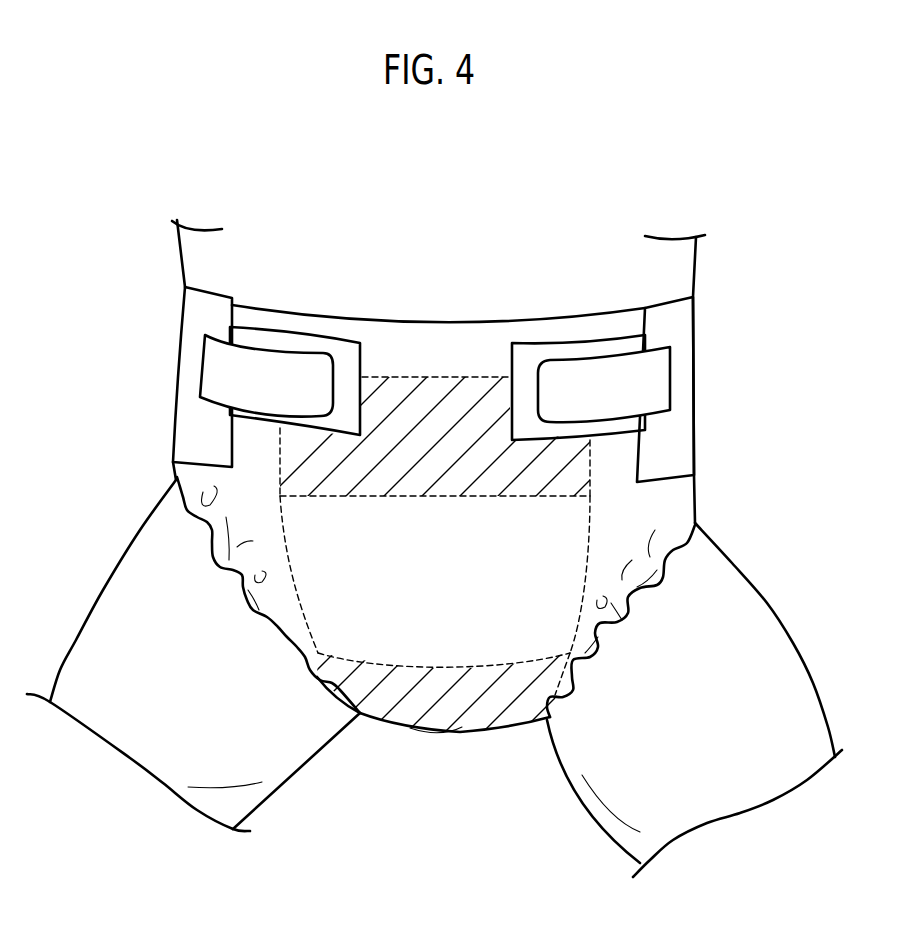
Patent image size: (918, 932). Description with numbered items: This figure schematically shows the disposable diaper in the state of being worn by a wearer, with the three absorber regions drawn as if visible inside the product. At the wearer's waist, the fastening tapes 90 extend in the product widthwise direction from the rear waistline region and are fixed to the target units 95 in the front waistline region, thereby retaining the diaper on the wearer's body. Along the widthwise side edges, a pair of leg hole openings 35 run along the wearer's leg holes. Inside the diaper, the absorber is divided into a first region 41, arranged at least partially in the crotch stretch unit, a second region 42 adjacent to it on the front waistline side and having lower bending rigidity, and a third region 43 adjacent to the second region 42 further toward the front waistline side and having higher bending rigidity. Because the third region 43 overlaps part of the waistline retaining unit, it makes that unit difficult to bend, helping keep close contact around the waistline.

The leg hole opening 35 is at (625, 623).
The first region 41 is at (417, 707).
The second region 42 is at (492, 618).
The third region 43 is at (398, 390).
The fastening tape 90 is at (597, 357).
The target unit 95 is at (528, 358).